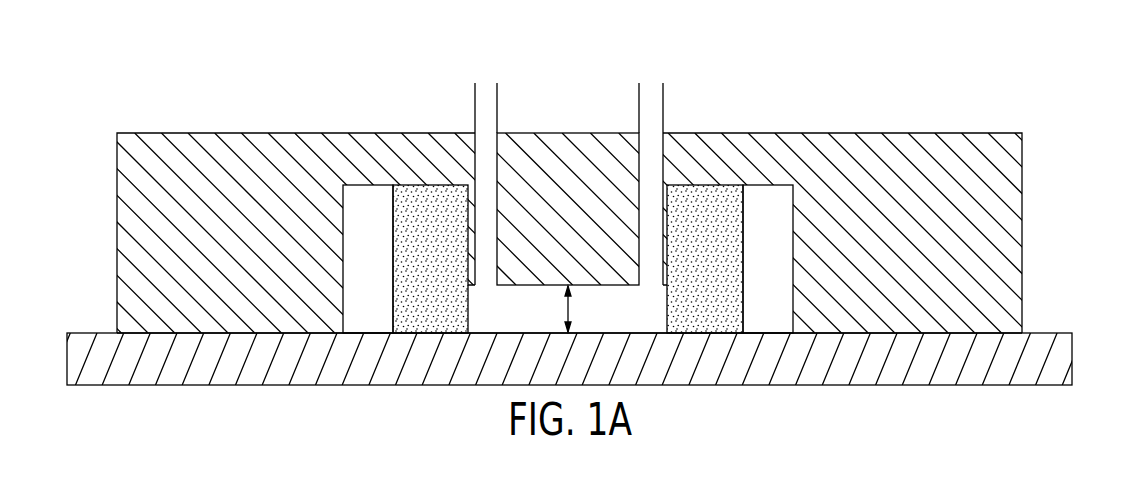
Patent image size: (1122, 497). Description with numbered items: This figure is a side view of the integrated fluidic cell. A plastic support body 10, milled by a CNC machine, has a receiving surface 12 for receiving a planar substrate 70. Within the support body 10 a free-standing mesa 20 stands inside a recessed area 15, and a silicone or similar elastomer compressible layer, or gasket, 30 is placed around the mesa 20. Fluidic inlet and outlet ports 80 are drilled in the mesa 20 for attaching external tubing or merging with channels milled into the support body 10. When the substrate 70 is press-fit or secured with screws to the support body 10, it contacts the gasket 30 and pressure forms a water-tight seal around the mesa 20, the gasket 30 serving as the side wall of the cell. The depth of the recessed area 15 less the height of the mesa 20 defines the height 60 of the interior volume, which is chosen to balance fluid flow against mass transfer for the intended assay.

The support body 10 is at (1012, 203).
The receiving surface 12 is at (1008, 332).
The recessed area 15 is at (370, 197).
The mesa 20 is at (554, 284).
The compressible layer 30 is at (430, 194).
The height 60 is at (570, 308).
The substrate 70 is at (1064, 358).
The fluidic inlet and outlet ports 80 is at (485, 92).